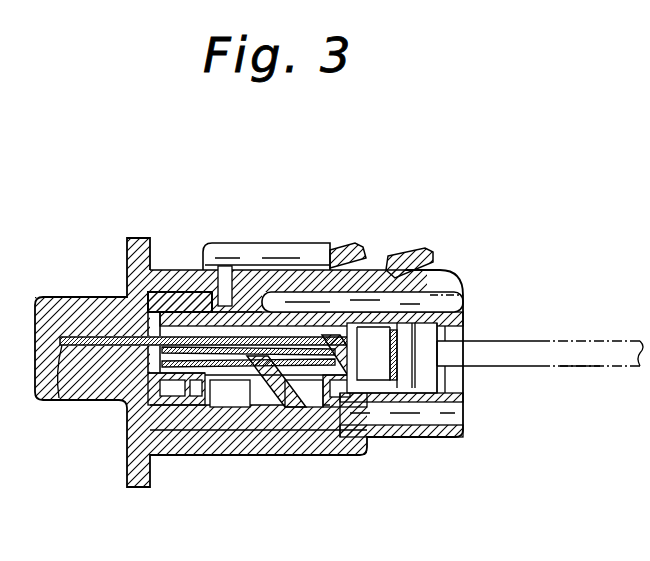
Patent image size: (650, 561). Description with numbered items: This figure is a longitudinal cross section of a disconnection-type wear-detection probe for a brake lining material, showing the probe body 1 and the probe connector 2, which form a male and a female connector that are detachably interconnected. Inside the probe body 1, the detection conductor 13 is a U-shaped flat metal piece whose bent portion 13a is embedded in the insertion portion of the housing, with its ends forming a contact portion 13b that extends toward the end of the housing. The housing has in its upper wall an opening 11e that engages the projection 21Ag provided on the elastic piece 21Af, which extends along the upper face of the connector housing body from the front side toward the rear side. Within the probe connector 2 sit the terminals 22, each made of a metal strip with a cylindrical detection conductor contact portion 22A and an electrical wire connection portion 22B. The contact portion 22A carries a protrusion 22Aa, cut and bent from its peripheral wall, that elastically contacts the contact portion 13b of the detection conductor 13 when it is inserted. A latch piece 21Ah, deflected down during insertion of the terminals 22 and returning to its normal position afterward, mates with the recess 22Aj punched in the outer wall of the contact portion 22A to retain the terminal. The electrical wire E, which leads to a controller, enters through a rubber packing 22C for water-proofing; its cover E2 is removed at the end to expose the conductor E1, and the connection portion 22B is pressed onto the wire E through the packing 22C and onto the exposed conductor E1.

The probe body 1 is at (167, 268).
The probe connector 2 is at (458, 442).
The opening 11e is at (255, 250).
The detection conductor 13 is at (62, 340).
The bent portion 13a is at (62, 398).
The contact portion 13b is at (197, 297).
The elastic piece 21Af is at (395, 268).
The projection 21Ag is at (317, 262).
The latch piece 21Ah is at (242, 382).
The terminal 22 is at (148, 308).
The detection conductor contact portion 22A is at (253, 323).
The protrusion 22Aa is at (200, 385).
The recess 22Aj is at (284, 410).
The electrical wire connection portion 22B is at (300, 337).
The rubber packing 22C is at (445, 330).
The electrical wire E is at (510, 333).
The conductor E1 is at (357, 395).
The cover E2 is at (553, 370).